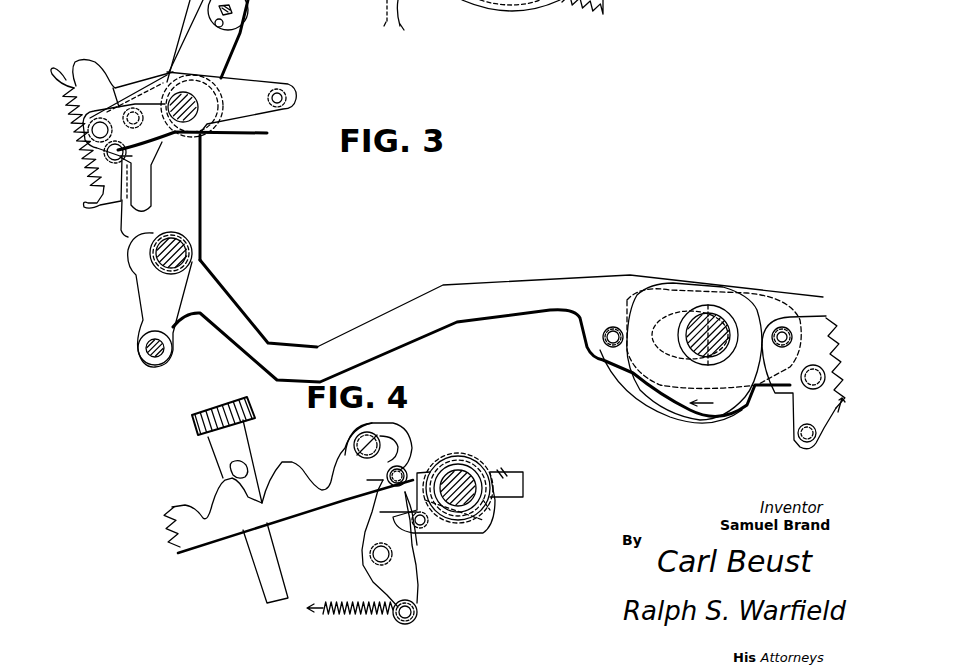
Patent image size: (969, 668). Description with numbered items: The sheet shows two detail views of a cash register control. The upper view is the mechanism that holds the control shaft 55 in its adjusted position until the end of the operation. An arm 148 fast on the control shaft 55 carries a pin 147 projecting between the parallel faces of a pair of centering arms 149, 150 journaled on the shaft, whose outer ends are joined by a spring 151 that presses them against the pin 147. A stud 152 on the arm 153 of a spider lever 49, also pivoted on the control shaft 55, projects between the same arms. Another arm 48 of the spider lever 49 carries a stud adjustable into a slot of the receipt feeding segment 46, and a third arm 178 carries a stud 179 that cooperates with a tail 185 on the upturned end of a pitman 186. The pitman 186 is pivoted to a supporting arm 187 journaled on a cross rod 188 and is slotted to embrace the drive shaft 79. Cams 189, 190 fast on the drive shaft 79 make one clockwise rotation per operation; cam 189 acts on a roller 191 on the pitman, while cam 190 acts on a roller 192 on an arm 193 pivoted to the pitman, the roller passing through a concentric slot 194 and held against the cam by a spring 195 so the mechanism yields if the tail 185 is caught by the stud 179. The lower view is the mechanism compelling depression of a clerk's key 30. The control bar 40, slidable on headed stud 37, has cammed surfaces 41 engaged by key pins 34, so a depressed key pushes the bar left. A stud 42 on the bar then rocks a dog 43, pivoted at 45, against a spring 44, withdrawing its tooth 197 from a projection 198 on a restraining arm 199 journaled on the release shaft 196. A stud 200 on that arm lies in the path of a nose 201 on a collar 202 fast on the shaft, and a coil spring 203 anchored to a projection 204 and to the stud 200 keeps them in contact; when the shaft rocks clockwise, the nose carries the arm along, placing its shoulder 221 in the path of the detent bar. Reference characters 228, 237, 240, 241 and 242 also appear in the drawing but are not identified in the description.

In FIG. 4, the clerk's key 30 is at (216, 408).
In FIG. 4, the key pin 34 is at (245, 465).
In FIG. 4, the headed stud 37 is at (366, 435).
In FIG. 4, the control bar 40 is at (232, 523).
In FIG. 3, the inclined or cammed surface 41 is at (232, 12).
In FIG. 4, the inclined or cammed surface 41 is at (195, 513).
In FIG. 4, the stud 42 is at (405, 470).
In FIG. 4, the dog 43 is at (375, 522).
In FIG. 4, the spring 44 is at (365, 615).
In FIG. 4, the pivot 45 is at (381, 557).
In FIG. 3, the receipt feeding segment 46 is at (500, 11).
In FIG. 3, the arm 48 is at (230, 33).
In FIG. 3, the spider lever 49 is at (167, 80).
In FIG. 3, the control shaft 55 is at (186, 100).
In FIG. 3, the drive shaft 79 is at (717, 313).
In FIG. 3, the pin 147 is at (137, 100).
In FIG. 3, the arm 148 is at (121, 92).
In FIG. 3, the centering arm 149 is at (97, 50).
In FIG. 3, the centering arm 150 is at (108, 203).
In FIG. 3, the spring 151 is at (88, 163).
In FIG. 3, the stud 152 is at (94, 135).
In FIG. 3, the arm 153 is at (114, 90).
In FIG. 3, the third arm 178 is at (260, 90).
In FIG. 3, the stud 179 is at (283, 97).
In FIG. 3, the tail 185 is at (267, 135).
In FIG. 3, the pitman 186 is at (512, 275).
In FIG. 3, the supporting arm 187 is at (160, 305).
In FIG. 3, the cross rod 188 is at (183, 248).
In FIG. 3, the cam 189 is at (680, 400).
In FIG. 3, the cam 190 is at (767, 405).
In FIG. 3, the roller 191 is at (613, 347).
In FIG. 3, the roller 192 is at (790, 320).
In FIG. 3, the arm 193 is at (768, 390).
In FIG. 3, the concentric slot 194 is at (817, 308).
In FIG. 3, the spring 195 is at (825, 430).
In FIG. 4, the release shaft 196 is at (467, 480).
In FIG. 4, the tooth 197 is at (380, 512).
In FIG. 4, the projection 198 is at (417, 535).
In FIG. 4, the restraining arm 199 is at (487, 517).
In FIG. 4, the stud 200 is at (423, 540).
In FIG. 4, the nose 201 is at (442, 532).
In FIG. 4, the collar 202 is at (455, 453).
In FIG. 4, the spring 203 is at (503, 478).
In FIG. 4, the projection 204 is at (523, 483).
In FIG. 4, the shoulder 221 is at (367, 480).
In FIG. 4, the stop 228 is at (495, 500).
In FIG. 3, the lever 237 is at (415, 13).
In FIG. 3, the pin 240 is at (414, 32).
In FIG. 3, the arm 241 is at (370, 31).
In FIG. 3, the link 242 is at (368, 11).